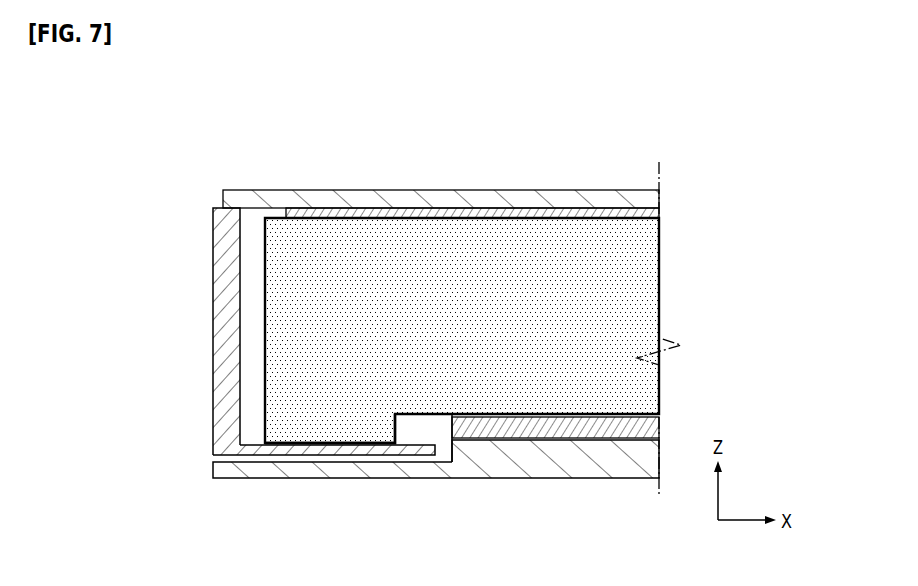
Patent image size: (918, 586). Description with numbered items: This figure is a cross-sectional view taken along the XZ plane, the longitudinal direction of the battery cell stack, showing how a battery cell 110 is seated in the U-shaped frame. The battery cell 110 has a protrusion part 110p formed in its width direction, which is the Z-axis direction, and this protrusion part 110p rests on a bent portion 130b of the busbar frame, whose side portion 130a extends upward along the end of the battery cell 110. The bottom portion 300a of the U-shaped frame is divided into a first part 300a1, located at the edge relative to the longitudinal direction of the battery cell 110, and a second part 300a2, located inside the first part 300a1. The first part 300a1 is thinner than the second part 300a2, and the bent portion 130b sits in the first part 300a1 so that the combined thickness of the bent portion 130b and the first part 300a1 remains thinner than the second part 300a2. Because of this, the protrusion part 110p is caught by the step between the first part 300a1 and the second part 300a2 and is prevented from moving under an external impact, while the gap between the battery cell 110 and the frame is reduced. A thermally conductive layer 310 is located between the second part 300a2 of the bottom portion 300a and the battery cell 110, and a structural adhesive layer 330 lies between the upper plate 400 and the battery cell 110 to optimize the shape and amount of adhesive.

The battery cell 110 is at (541, 258).
The protrusion part 110p is at (305, 433).
The side portion of frame 130a is at (229, 312).
The bent portion 130b is at (403, 451).
The bottom portion 300a is at (762, 145).
The first part 300a1 is at (246, 471).
The second part 300a2 is at (597, 466).
The thermally conductive layer 310 is at (515, 429).
The structural adhesive layer 330 is at (457, 214).
The upper plate 400 is at (344, 203).